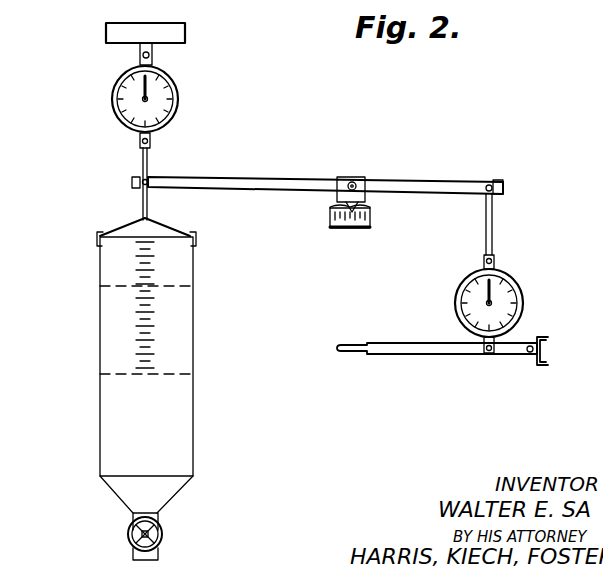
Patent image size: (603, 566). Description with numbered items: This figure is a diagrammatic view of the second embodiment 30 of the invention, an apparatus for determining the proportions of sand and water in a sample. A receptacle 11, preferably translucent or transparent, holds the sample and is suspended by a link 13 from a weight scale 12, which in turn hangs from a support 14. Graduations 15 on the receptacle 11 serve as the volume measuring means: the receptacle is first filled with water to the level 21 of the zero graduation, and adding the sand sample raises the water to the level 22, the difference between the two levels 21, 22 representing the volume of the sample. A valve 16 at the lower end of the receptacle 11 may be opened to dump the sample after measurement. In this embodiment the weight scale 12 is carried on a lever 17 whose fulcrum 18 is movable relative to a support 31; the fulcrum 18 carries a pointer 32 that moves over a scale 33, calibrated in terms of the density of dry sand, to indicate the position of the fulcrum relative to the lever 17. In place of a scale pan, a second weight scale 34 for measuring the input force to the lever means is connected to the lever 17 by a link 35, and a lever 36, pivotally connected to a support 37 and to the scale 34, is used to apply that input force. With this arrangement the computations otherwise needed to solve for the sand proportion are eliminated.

The receptacle 11 is at (100, 421).
The weight scale 12 is at (112, 100).
The link 13 is at (142, 165).
The support 14 is at (185, 33).
The graduations 15 is at (135, 323).
The valve 16 is at (128, 535).
The lever 17 is at (242, 180).
The fulcrum 18 is at (358, 178).
The level 21 is at (182, 372).
The level 22 is at (183, 284).
The second embodiment 30 is at (60, 234).
The support 31 is at (372, 212).
The pointer 32 is at (330, 213).
The scale 33 is at (335, 229).
The weight scale 34 is at (524, 298).
The link 35 is at (492, 232).
The lever 36 is at (507, 356).
The support 37 is at (545, 366).